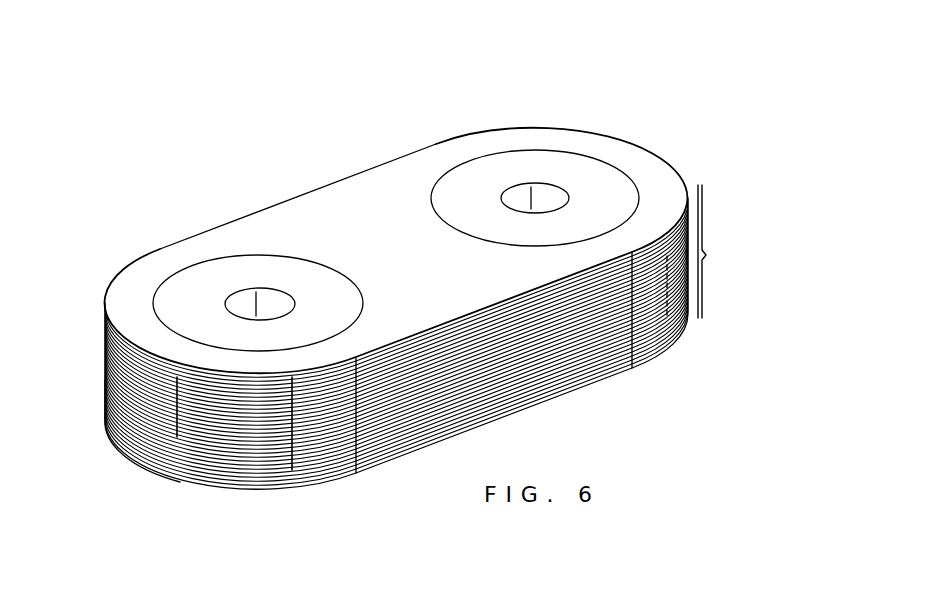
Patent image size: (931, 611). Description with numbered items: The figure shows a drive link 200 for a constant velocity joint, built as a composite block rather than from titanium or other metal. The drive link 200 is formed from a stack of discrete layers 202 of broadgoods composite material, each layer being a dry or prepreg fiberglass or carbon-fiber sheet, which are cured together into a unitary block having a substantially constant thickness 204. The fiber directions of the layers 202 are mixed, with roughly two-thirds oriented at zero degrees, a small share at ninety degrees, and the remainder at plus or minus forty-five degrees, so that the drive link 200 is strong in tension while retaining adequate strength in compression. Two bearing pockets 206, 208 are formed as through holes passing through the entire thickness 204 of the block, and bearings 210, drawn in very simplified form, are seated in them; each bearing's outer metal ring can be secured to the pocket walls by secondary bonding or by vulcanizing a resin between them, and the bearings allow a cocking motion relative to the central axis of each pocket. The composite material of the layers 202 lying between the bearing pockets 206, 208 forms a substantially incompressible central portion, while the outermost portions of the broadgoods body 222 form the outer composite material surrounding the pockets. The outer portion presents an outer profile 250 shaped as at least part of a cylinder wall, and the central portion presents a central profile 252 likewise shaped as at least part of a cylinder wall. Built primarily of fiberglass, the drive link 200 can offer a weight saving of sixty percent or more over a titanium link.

The drive link 200 is at (178, 113).
The layers 202 is at (154, 468).
The thickness 204 is at (711, 251).
The bearing pocket 206 is at (245, 256).
The bearing pocket 208 is at (551, 150).
The bearings 210 is at (190, 283).
The broadgoods body 222 is at (345, 178).
The outer profile 250 is at (653, 156).
The central profile 252 is at (460, 227).